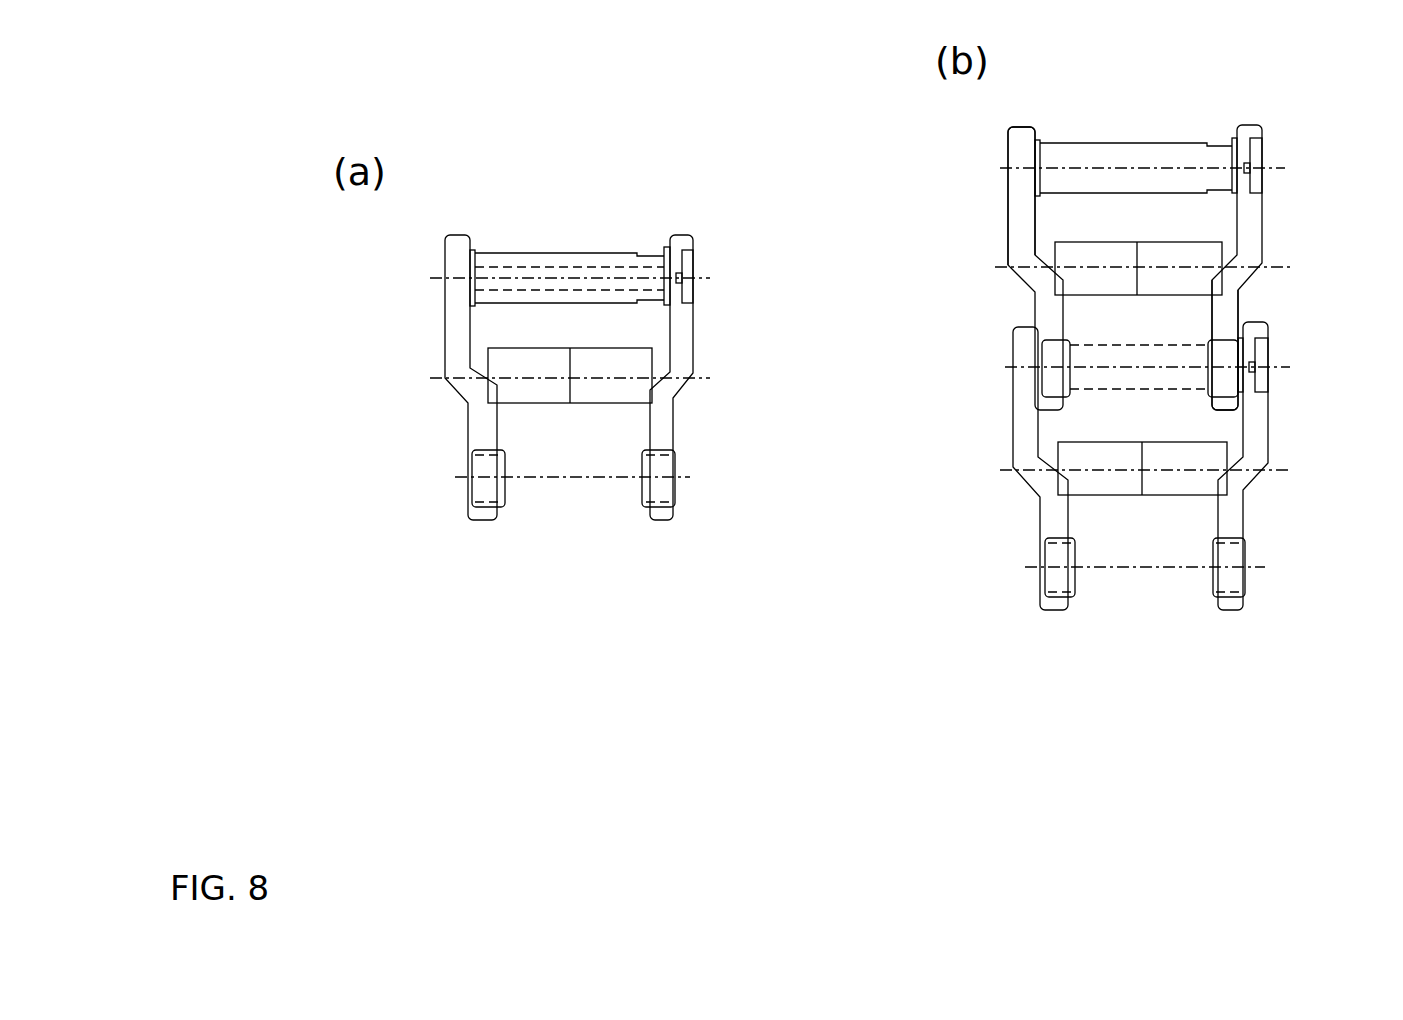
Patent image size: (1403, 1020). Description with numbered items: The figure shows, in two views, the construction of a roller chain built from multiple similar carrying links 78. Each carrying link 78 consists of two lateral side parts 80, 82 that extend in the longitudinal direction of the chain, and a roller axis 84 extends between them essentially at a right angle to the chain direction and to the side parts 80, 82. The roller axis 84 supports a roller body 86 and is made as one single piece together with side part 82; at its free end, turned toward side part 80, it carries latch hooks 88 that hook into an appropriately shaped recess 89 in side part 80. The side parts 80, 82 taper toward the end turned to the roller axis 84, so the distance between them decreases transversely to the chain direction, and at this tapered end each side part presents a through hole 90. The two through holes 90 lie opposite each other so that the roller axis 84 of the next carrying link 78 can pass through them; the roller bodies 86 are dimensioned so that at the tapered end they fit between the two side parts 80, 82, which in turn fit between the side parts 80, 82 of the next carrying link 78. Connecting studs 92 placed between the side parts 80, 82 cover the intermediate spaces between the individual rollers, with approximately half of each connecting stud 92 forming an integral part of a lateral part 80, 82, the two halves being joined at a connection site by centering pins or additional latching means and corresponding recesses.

The carrying link 78 is at (1005, 158).
The side part 80 is at (702, 347).
The side part 82 is at (432, 307).
The roller axis 84 is at (506, 273).
The roller body 86 is at (1203, 320).
The latch hooks 88 is at (695, 253).
The recess 89 is at (695, 298).
The through hole 90 is at (512, 490).
The connecting stud 92 is at (517, 395).